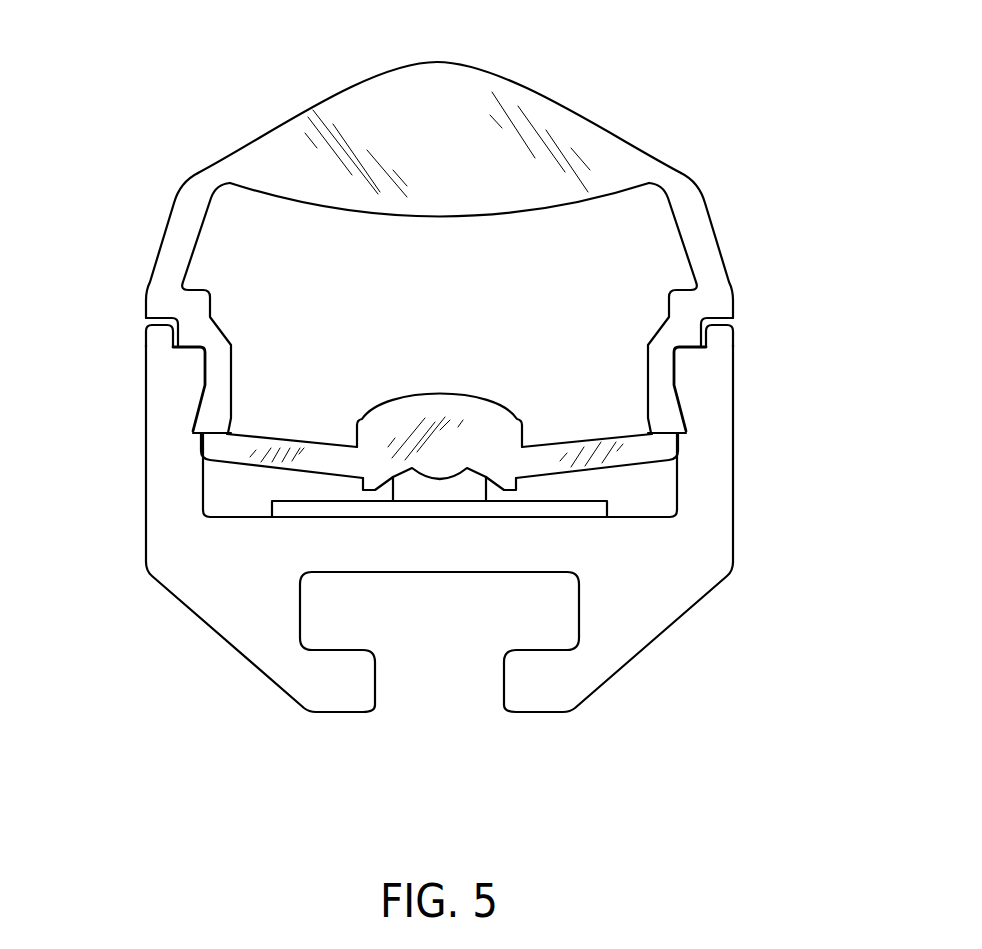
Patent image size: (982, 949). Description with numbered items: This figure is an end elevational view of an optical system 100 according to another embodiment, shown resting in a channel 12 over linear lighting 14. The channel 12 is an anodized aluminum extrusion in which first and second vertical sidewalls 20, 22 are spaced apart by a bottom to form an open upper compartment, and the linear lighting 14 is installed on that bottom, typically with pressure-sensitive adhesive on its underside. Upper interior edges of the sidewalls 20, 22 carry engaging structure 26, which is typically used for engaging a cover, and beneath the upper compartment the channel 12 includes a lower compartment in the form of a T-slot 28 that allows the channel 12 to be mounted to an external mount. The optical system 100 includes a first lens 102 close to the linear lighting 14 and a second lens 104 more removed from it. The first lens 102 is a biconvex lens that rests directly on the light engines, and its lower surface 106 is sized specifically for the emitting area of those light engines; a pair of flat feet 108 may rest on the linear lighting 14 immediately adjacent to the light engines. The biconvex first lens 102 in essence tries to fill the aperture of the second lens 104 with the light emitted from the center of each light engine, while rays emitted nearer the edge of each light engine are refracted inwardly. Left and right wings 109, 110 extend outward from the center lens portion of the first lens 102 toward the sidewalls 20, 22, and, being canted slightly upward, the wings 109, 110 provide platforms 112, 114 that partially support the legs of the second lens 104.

The channel 12 is at (145, 472).
The linear lighting 14 is at (271, 507).
The first vertical sidewall 20 is at (162, 401).
The second vertical sidewall 22 is at (713, 430).
The engaging structure 26 is at (172, 336).
The T-slot 28 is at (450, 657).
The optical system 100 is at (219, 136).
The first lens 102 is at (407, 395).
The second lens 104 is at (553, 93).
The lower surface 106 is at (473, 470).
The flat feet 108 is at (373, 486).
The left wing 109 is at (301, 447).
The right wing 110 is at (584, 446).
The platform 112 is at (214, 428).
The platform 114 is at (659, 430).